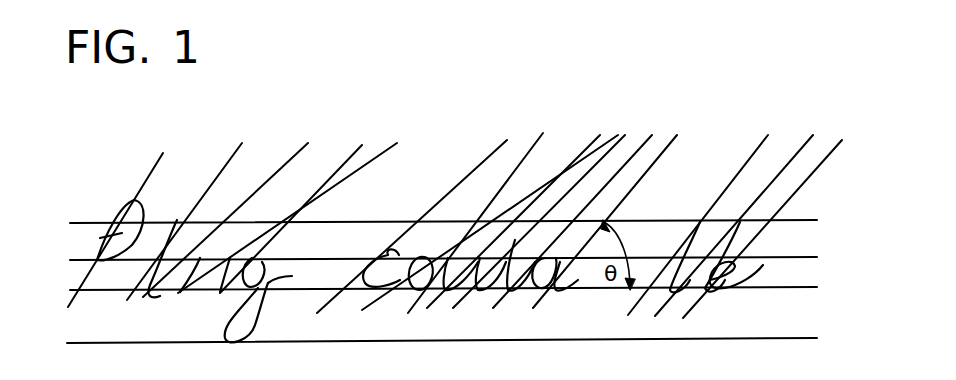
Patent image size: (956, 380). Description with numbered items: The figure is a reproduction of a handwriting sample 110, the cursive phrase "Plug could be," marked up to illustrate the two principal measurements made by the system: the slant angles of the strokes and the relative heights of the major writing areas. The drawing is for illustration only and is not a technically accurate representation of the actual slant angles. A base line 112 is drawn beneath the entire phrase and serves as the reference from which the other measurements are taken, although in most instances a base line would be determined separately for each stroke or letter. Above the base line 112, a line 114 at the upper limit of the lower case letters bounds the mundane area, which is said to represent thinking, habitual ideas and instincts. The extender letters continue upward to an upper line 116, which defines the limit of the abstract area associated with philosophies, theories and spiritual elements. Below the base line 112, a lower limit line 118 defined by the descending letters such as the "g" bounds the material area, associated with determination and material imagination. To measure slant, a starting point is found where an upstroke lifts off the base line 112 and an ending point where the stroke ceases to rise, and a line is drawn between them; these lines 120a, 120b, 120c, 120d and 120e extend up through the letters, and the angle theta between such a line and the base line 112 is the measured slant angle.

The handwriting sample 110 is at (118, 190).
The base line 112 is at (805, 286).
The mundane area upper line 114 is at (805, 256).
The abstract area upper line 116 is at (805, 219).
The lower limit line 118 is at (805, 338).
The slant line 120a is at (165, 154).
The slant line 120b is at (240, 145).
The slant line 120c is at (304, 144).
The slant line 120d is at (360, 144).
The slant line 120e is at (392, 143).